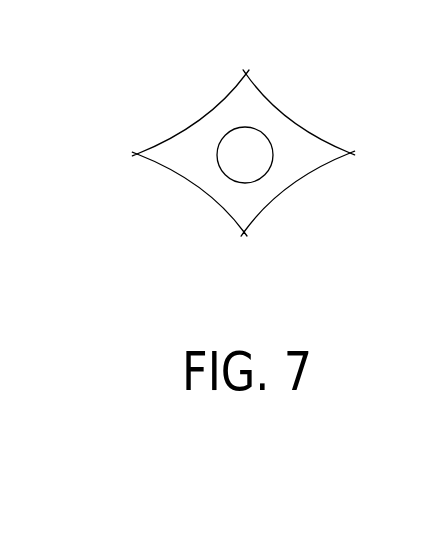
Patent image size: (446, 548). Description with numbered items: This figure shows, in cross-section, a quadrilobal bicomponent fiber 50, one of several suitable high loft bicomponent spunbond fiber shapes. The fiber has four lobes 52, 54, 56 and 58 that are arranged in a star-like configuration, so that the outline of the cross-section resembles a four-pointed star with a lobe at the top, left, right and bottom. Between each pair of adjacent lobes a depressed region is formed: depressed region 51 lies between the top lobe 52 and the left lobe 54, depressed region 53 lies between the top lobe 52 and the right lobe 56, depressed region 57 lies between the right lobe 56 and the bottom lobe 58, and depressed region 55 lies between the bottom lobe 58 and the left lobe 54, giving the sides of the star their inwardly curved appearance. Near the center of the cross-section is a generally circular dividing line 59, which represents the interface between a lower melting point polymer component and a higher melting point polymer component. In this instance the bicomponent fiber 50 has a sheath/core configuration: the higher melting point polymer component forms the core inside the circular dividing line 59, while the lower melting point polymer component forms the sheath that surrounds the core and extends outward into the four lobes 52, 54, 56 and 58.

The quadrilobal bicomponent fiber 50 is at (249, 140).
The depressed region 51 is at (210, 113).
The lobe 52 is at (250, 88).
The depressed region 53 is at (278, 115).
The lobe 54 is at (158, 150).
The depressed region 55 is at (205, 190).
The lobe 56 is at (327, 152).
The depressed region 57 is at (298, 180).
The lobe 58 is at (248, 208).
The circular dividing line 59 is at (217, 155).